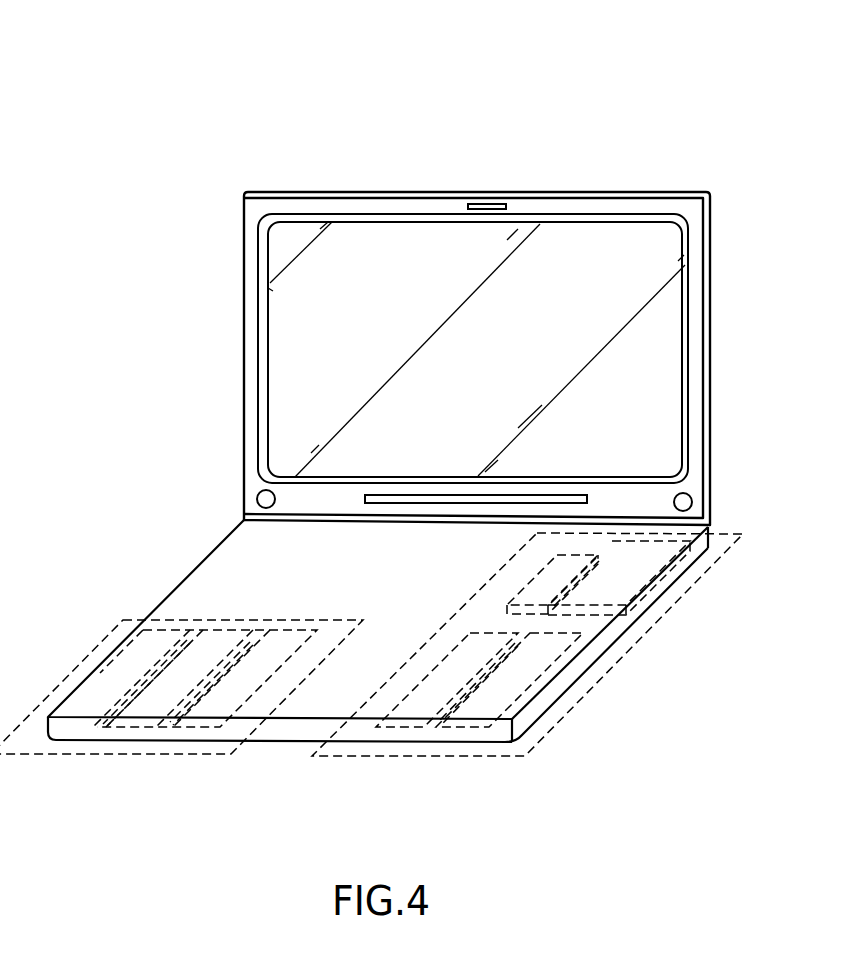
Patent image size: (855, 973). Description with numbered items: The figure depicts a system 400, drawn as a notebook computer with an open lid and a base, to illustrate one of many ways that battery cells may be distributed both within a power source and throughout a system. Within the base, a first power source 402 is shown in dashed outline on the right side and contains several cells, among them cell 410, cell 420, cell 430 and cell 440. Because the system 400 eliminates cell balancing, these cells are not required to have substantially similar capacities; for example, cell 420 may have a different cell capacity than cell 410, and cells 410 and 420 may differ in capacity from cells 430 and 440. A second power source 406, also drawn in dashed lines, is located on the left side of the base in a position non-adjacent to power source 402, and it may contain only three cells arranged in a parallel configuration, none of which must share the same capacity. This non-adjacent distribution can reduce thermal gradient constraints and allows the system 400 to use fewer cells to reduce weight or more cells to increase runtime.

The system 400 is at (107, 102).
The power source 402 is at (605, 672).
The second power source 406 is at (72, 673).
The cell 410 is at (530, 585).
The cell 420 is at (662, 580).
The cell 430 is at (400, 737).
The cell 440 is at (463, 737).